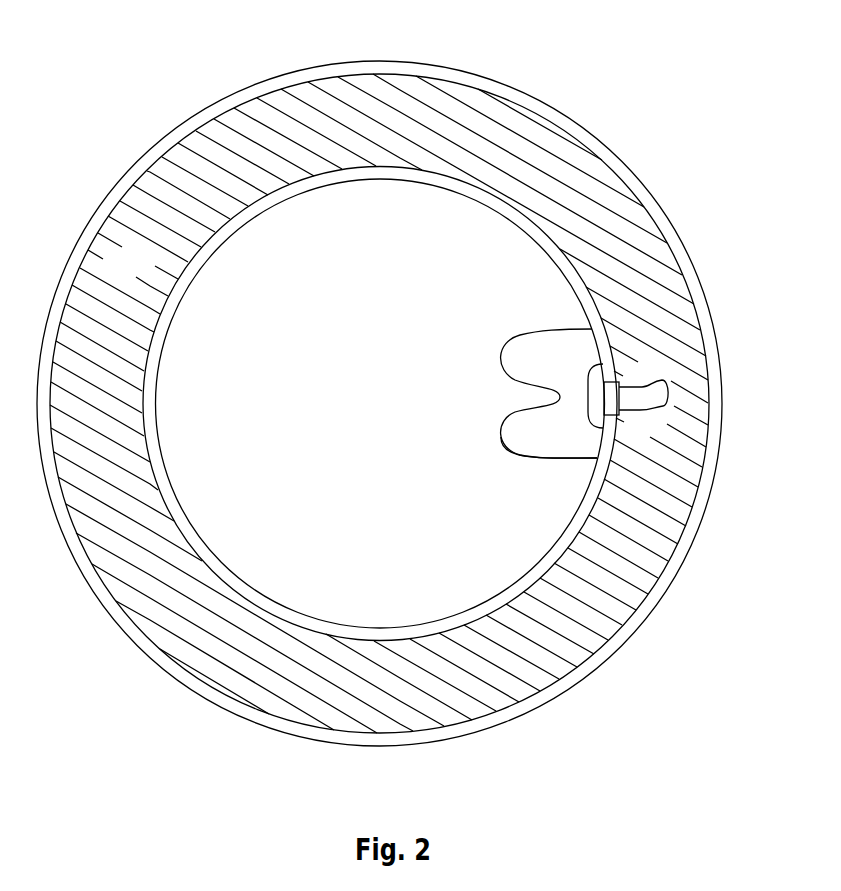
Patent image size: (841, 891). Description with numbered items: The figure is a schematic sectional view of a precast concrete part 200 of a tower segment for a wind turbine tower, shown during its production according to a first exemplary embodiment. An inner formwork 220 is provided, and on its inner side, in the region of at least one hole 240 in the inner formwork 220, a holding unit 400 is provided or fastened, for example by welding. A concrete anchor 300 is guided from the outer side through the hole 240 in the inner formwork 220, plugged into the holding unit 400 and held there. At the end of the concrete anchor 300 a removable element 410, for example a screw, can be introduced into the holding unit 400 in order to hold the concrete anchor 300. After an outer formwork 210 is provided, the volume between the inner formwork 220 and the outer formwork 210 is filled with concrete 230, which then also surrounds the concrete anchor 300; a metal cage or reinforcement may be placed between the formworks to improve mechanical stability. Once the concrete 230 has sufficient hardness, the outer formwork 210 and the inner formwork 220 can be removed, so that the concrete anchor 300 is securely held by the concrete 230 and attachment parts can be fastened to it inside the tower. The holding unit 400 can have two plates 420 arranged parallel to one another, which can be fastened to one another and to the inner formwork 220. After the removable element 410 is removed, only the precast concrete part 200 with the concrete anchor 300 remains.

The precast concrete part 200 is at (293, 130).
The outer formwork 210 is at (200, 128).
The inner formwork 220 is at (268, 210).
The concrete 230 is at (379, 403).
The hole 240 is at (610, 383).
The concrete anchor 300 is at (628, 413).
The holding unit 400 is at (545, 355).
The removable element 410 is at (592, 398).
The plates 420 is at (525, 435).